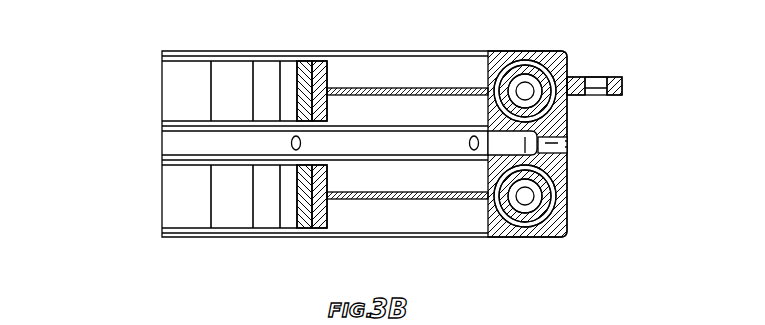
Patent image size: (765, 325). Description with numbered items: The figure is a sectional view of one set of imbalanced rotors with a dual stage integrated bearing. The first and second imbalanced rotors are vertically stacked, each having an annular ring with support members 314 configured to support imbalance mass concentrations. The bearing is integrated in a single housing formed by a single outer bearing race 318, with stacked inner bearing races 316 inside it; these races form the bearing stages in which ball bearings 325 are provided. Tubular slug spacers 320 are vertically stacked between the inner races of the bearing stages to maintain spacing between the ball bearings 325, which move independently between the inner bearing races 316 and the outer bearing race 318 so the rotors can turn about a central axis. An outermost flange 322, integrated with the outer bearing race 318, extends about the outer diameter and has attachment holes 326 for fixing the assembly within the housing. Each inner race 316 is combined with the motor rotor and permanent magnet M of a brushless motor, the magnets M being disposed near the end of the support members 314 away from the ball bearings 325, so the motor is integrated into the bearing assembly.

The support member 314 is at (350, 87).
The inner bearing race 316 is at (498, 124).
The outer bearing race 318 is at (555, 168).
The tubular slug spacer 320 is at (533, 60).
The outermost flange 322 is at (623, 82).
The ball bearing 325 is at (528, 94).
The attachment hole 326 is at (601, 77).
The permanent magnet M is at (196, 151).